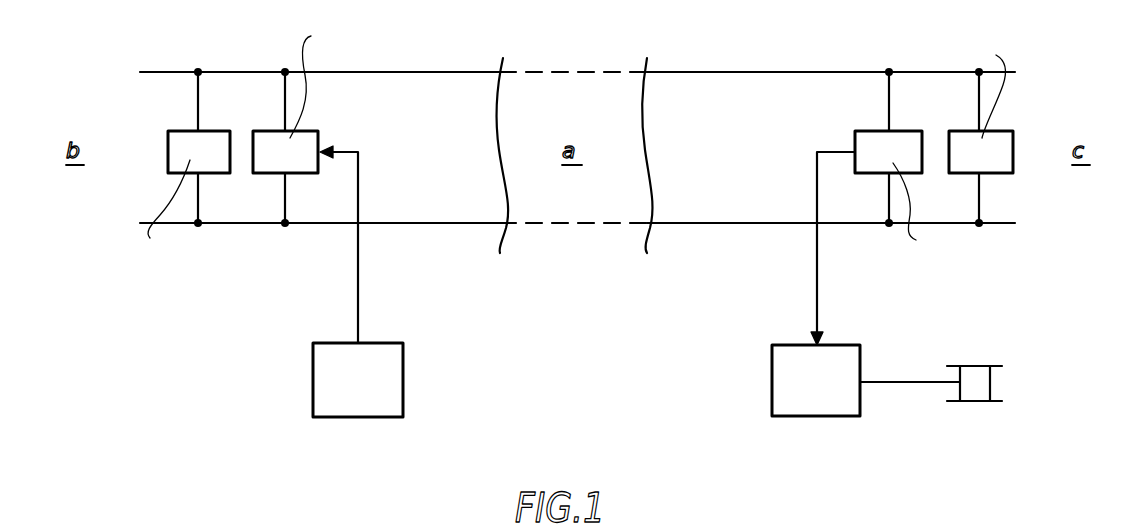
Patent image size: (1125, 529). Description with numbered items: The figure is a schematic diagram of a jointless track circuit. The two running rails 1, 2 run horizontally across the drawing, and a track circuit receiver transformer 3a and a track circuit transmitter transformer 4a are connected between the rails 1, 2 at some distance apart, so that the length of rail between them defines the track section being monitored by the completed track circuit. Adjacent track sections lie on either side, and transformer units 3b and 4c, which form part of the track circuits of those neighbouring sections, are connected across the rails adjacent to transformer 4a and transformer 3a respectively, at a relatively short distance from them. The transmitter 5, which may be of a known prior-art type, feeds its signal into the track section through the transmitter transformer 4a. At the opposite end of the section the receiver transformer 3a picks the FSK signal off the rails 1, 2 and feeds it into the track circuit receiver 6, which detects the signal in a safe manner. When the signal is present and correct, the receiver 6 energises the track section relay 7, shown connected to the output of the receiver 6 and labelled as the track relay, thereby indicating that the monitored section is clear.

The running rail 1 is at (780, 71).
The running rail 2 is at (693, 225).
The track circuit receiver transformer 3a is at (866, 138).
The transformer unit 3b is at (185, 145).
The track circuit transmitter transformer 4a is at (297, 147).
The transformer unit 4c is at (990, 146).
The transmitter 5 is at (330, 408).
The track circuit receiver 6 is at (782, 418).
The track section relay 7 is at (975, 380).